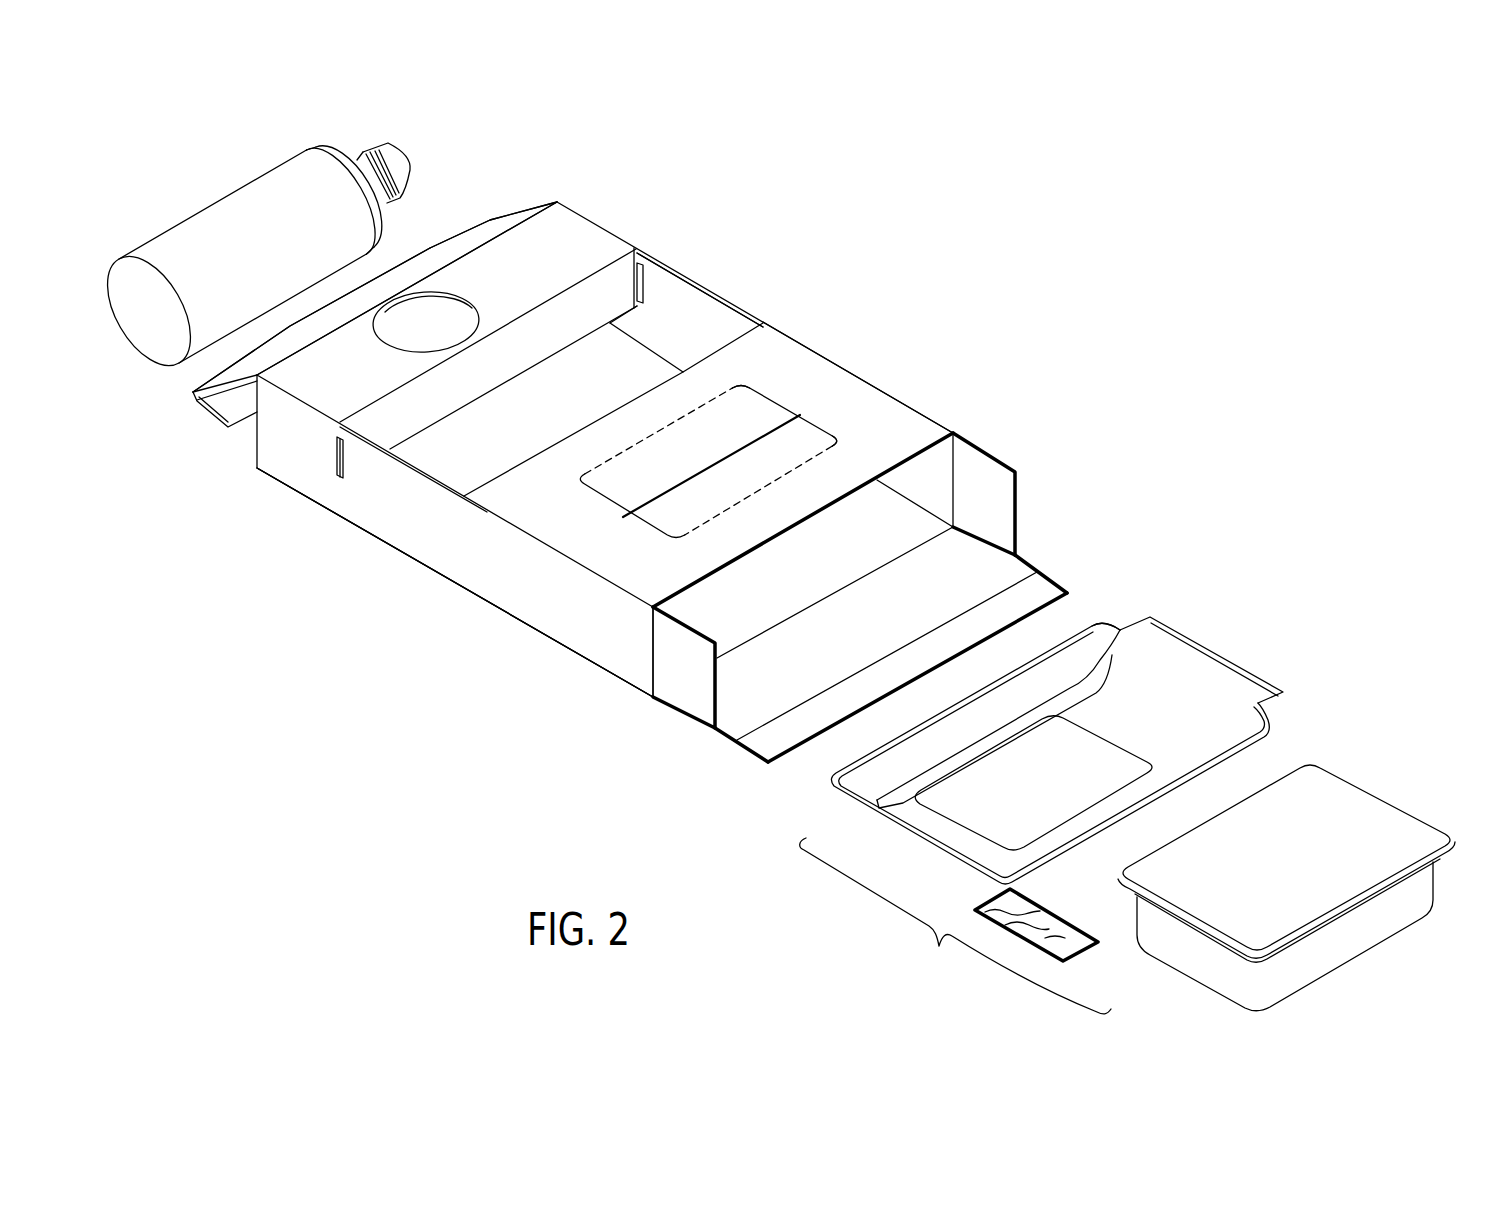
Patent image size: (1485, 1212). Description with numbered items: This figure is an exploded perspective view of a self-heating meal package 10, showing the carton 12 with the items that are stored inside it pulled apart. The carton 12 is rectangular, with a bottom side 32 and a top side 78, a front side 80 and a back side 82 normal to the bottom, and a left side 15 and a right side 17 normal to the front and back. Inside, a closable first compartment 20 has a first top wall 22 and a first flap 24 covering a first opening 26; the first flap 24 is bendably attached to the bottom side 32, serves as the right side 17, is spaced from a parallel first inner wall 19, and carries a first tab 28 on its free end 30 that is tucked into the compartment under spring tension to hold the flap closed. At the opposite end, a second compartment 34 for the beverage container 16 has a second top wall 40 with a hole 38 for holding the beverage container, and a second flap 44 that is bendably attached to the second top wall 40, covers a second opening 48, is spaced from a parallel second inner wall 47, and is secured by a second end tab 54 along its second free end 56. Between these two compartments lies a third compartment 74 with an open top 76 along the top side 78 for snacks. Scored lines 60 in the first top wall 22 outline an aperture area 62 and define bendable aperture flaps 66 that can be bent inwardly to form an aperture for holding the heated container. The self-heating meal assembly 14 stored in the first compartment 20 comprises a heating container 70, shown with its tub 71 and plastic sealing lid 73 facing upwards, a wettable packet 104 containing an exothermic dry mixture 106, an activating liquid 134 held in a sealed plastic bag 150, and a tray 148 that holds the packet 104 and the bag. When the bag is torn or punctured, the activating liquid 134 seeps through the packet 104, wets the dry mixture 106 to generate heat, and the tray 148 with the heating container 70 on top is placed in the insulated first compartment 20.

The self-heating meal package 10 is at (392, 650).
The carton 12 is at (636, 676).
The self-heating meal assembly 14 is at (955, 926).
The left side 15 is at (490, 226).
The beverage container 16 is at (216, 214).
The right side 17 is at (975, 548).
The first inner wall 19 is at (768, 349).
The first compartment 20 is at (935, 476).
The first top wall 22 is at (848, 382).
The first flap 24 is at (726, 726).
The first opening 26 is at (842, 510).
The first tab 28 is at (1040, 587).
The free end 30 is at (885, 650).
The bottom side 32 is at (663, 368).
The second compartment 34 is at (455, 306).
The hole 38 is at (420, 292).
The second top wall 40 is at (587, 230).
The second flap 44 is at (228, 376).
The second inner wall 47 is at (623, 313).
The second opening 48 is at (293, 467).
The second end tab 54 is at (233, 414).
The second free end 56 is at (292, 328).
The scored lines 60 is at (765, 498).
The aperture area 62 is at (632, 450).
The aperture flaps 66 is at (763, 392).
The heating container 70 is at (1363, 798).
The tub 71 is at (1364, 930).
The plastic sealing lid 73 is at (1377, 866).
The third compartment 74 is at (474, 420).
The open top 76 is at (564, 343).
The top side 78 is at (720, 326).
The front side 80 is at (364, 519).
The back side 82 is at (678, 288).
The packet 104 is at (1156, 744).
The exothermic dry mixture 106 is at (1085, 744).
The activating liquid 134 is at (1050, 925).
The tray 148 is at (1110, 606).
The sealed plastic bag 150 is at (978, 908).